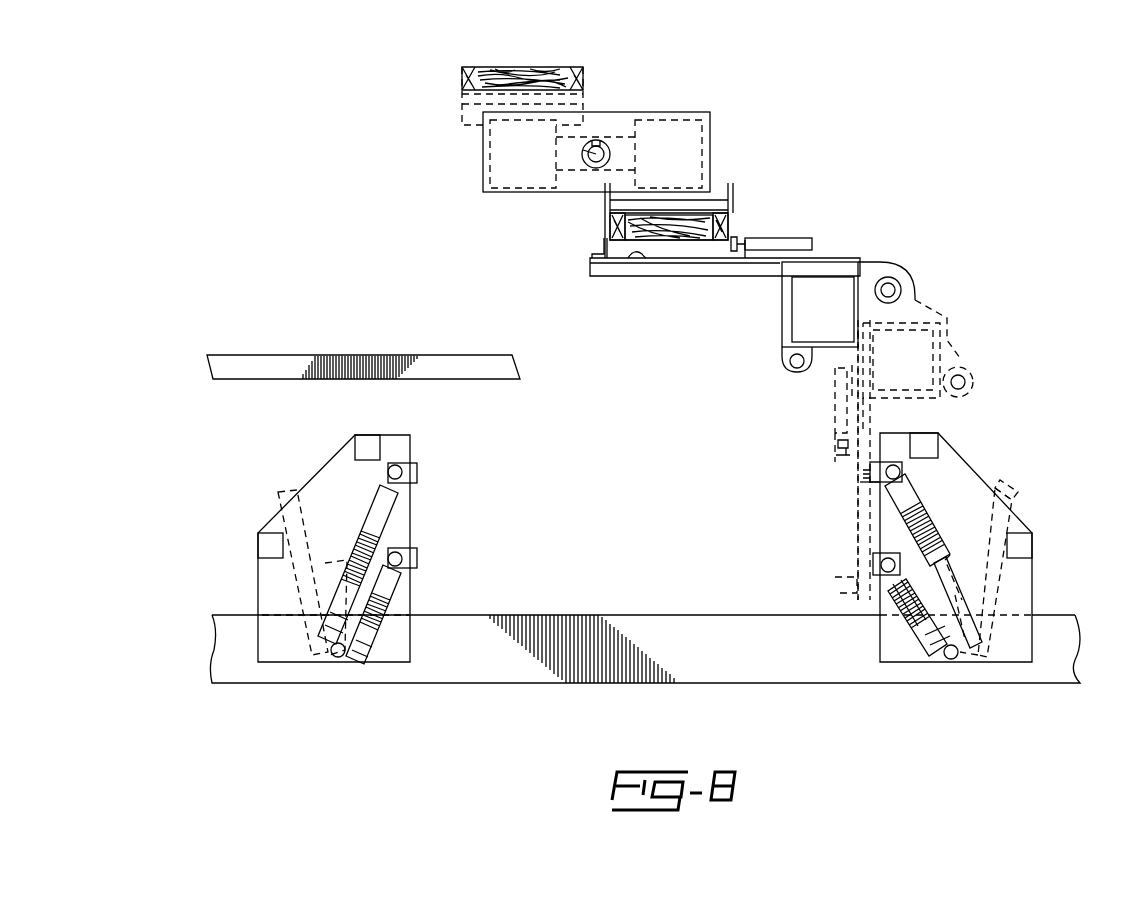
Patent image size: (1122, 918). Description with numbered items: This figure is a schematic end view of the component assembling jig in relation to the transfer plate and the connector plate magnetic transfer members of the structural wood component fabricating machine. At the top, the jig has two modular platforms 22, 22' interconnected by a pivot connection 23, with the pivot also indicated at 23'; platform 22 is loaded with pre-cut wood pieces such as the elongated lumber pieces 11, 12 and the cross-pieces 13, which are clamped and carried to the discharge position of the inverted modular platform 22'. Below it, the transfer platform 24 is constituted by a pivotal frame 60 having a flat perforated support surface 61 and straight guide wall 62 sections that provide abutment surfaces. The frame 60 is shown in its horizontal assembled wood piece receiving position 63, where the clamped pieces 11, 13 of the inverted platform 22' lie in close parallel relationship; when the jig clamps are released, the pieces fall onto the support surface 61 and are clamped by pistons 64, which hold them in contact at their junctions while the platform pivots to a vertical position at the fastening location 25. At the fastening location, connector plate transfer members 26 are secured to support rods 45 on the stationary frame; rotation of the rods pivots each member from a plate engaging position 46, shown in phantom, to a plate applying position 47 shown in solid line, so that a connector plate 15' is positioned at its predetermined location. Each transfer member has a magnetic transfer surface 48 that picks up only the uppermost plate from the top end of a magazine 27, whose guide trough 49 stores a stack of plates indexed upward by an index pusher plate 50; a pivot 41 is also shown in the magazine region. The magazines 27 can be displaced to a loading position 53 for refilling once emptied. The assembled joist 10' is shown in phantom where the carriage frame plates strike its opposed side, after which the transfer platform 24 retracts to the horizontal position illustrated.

The joist 10' is at (786, 465).
The elongated horizontal support lumber piece 11 is at (730, 217).
The elongated horizontal support lumber piece 12 is at (607, 220).
The structural load transfer cross-piece 13 is at (703, 217).
The connector plate 15' is at (835, 493).
The modular platform 22 is at (586, 110).
The modular platform 22' is at (493, 240).
The pivot connection 23 is at (623, 118).
The pivot pin lowered position 23' is at (543, 186).
The transfer platform 24 is at (717, 270).
The fastening location 25 is at (862, 644).
The connector plate transfer member 26 is at (873, 463).
The magazine 27 is at (905, 590).
The pivot 41 is at (955, 660).
The support rod 45 is at (888, 292).
The plate engaging position 46 is at (900, 478).
The plate applying position 47 is at (870, 470).
The magnetic transfer surface 48 is at (870, 478).
The guide trough 49 is at (900, 588).
The index pusher plate 50 is at (930, 640).
The loading position 53 is at (1005, 490).
The pivotal frame 60 is at (668, 272).
The support surface 61 is at (635, 258).
The guide wall 62 is at (595, 250).
The assembled wood piece receiving position 63 is at (760, 268).
The piston 64 is at (798, 245).